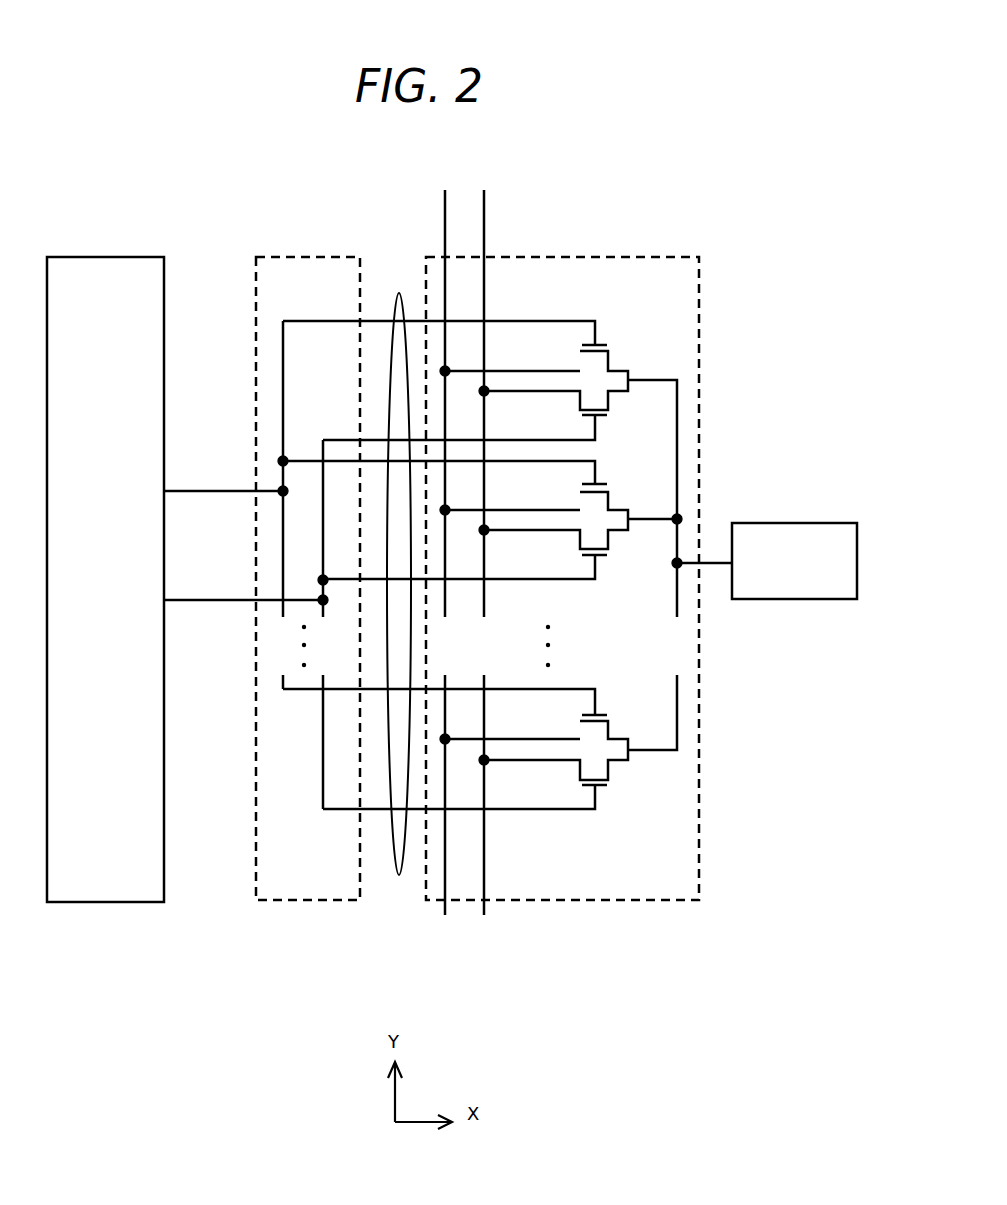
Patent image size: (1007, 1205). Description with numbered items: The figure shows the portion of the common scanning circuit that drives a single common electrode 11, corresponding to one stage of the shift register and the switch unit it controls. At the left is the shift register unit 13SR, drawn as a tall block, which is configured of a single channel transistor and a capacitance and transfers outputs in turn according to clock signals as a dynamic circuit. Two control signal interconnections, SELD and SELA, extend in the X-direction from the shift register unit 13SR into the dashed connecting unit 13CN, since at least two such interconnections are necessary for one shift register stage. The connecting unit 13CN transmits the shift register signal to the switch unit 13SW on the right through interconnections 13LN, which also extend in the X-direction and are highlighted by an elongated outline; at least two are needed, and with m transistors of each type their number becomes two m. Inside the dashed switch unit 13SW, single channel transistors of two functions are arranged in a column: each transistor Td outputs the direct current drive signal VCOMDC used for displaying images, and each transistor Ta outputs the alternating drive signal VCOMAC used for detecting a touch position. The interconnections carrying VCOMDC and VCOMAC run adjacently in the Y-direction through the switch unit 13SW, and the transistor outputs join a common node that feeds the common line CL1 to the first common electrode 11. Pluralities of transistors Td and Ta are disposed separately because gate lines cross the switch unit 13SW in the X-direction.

The shift register unit 13SR is at (108, 257).
The connecting unit 13CN is at (278, 257).
The switch unit 13SW is at (655, 257).
The interconnection 13LN is at (398, 875).
The common electrode 11 is at (795, 523).
The common electrode signal line CL1 is at (715, 565).
The transistor Td is at (455, 550).
The transistor Ta is at (473, 613).
The control signal SELD is at (226, 505).
The control signal SELA is at (246, 624).
The direct current drive signal VCOMDC is at (397, 538).
The alternating drive signal VCOMAC is at (545, 538).